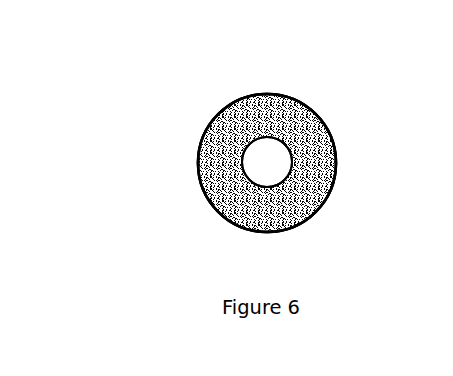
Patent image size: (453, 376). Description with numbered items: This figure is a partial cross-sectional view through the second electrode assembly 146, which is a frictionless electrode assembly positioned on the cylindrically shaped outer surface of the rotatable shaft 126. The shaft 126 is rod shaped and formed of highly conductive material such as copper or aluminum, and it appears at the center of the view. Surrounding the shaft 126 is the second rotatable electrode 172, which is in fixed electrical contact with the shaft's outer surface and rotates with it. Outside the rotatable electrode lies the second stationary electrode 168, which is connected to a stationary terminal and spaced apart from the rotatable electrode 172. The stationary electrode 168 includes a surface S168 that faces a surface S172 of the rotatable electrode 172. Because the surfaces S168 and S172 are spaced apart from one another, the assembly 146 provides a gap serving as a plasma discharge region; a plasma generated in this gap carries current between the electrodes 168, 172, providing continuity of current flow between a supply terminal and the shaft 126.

The second electrode assembly 146 is at (203, 105).
The second stationary electrode 168 is at (320, 109).
The second rotatable electrode 172 is at (292, 160).
The rotatable shaft 126 is at (273, 157).
The surface of second rotatable electrode S172 is at (242, 153).
The surface of second stationary electrode S168 is at (200, 190).